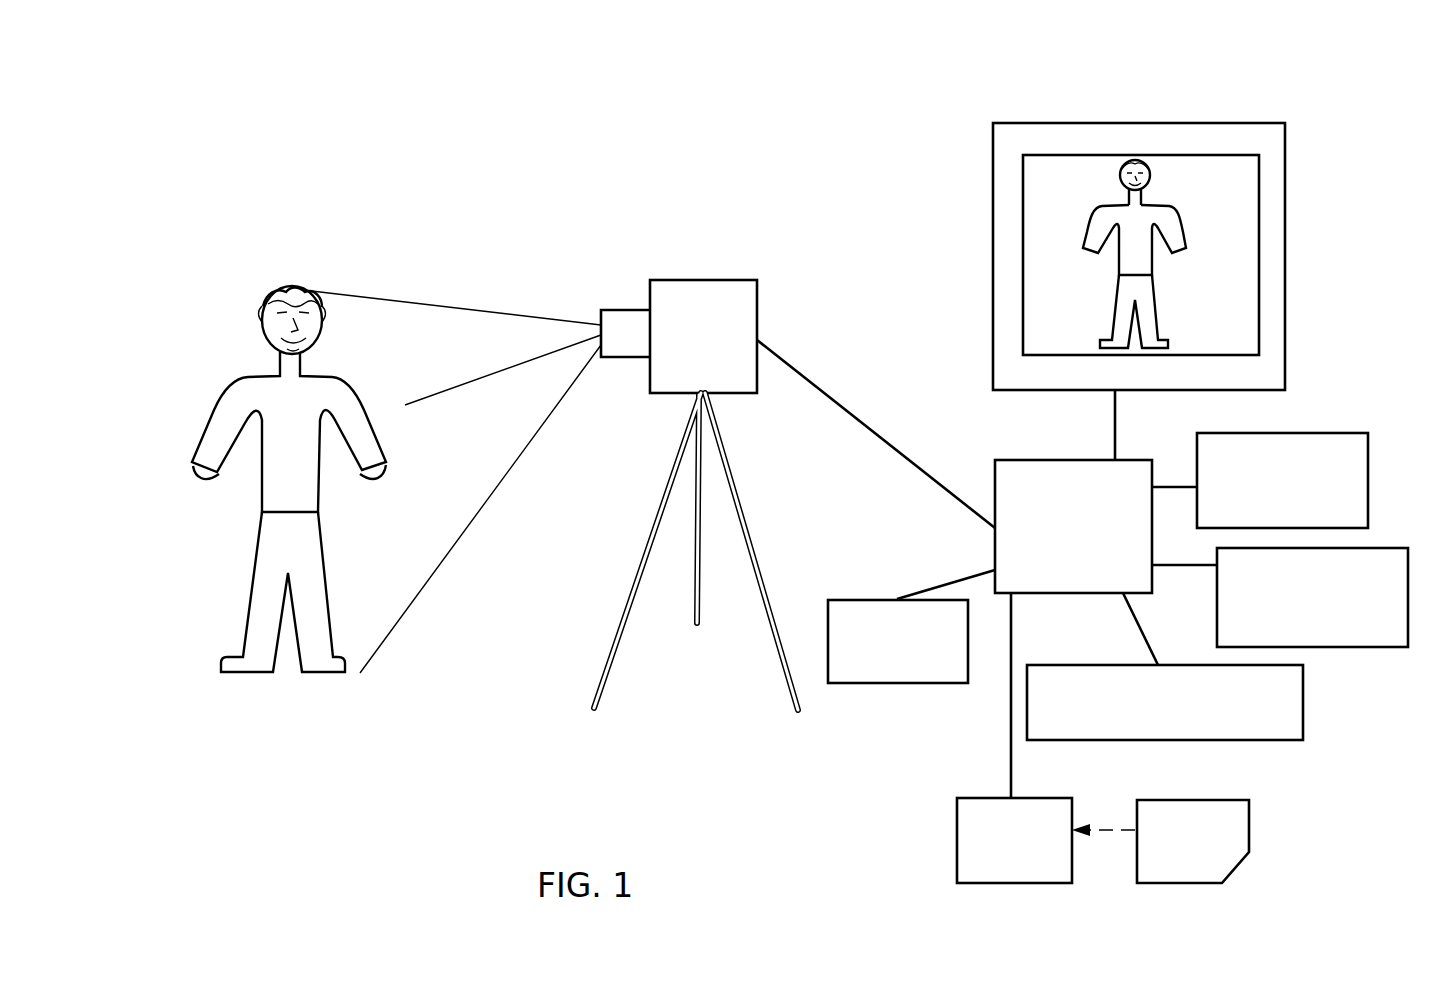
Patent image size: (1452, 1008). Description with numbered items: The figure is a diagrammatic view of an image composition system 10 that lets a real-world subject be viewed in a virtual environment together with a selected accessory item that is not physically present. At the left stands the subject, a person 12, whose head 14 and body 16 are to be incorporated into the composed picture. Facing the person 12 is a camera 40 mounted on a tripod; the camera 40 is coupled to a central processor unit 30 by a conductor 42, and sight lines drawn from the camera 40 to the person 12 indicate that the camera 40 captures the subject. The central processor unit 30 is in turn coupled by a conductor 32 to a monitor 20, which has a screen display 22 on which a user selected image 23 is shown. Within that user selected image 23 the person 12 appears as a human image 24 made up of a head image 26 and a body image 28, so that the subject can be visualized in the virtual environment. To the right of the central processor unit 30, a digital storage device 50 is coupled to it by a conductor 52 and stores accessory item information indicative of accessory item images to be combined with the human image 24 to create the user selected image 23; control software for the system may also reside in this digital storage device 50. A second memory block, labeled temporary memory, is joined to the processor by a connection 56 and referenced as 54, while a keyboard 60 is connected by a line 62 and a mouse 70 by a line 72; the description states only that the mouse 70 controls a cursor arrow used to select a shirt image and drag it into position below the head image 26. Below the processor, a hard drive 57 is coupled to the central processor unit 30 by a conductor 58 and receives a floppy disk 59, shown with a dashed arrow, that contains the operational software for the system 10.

The image composition system 10 is at (484, 194).
The person 12 is at (275, 468).
The head 14 is at (270, 305).
The body 16 is at (260, 533).
The monitor 20 is at (1123, 233).
The screen display 22 is at (1038, 243).
The user selected image 23 is at (1238, 167).
The human image 24 is at (1126, 214).
The head image 26 is at (1145, 170).
The body image 28 is at (1155, 262).
The central processor unit 30 is at (1010, 460).
The conductor 32 is at (1115, 425).
The camera 40 is at (673, 280).
The conductor 42 is at (798, 370).
The digital storage device 50 is at (1352, 432).
The conductor 52 is at (1176, 485).
The temporary memory (RAM) 54 is at (1390, 548).
The temporary memory connection 56 is at (1182, 568).
The hard drive 57 is at (1005, 885).
The conductor 58 is at (1010, 768).
The floppy disk 59 is at (1249, 845).
The keyboard 60 is at (1303, 698).
The keyboard connection 62 is at (1142, 633).
The mouse 70 is at (912, 685).
The mouse connection 72 is at (938, 586).